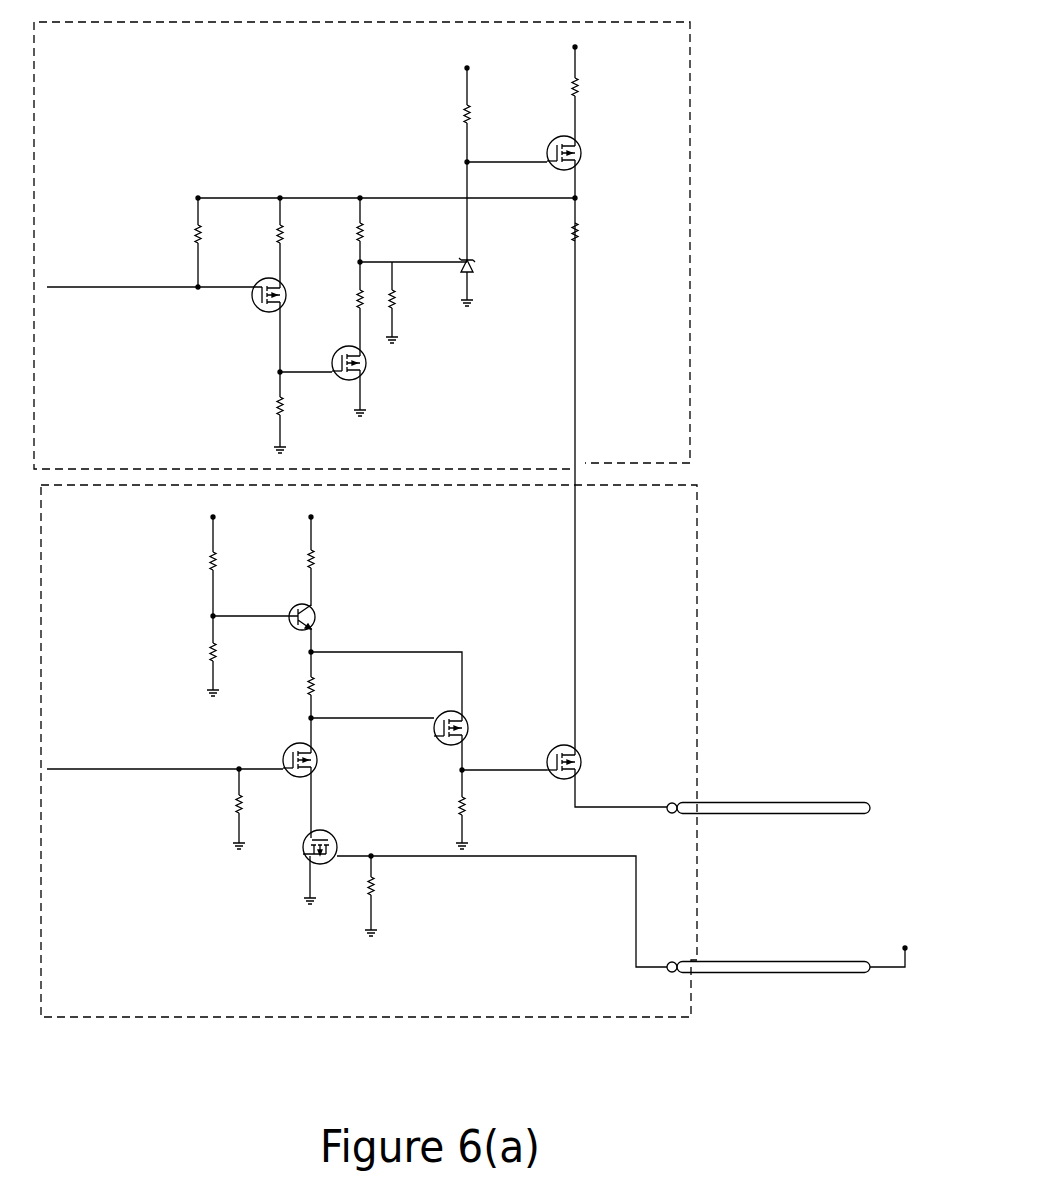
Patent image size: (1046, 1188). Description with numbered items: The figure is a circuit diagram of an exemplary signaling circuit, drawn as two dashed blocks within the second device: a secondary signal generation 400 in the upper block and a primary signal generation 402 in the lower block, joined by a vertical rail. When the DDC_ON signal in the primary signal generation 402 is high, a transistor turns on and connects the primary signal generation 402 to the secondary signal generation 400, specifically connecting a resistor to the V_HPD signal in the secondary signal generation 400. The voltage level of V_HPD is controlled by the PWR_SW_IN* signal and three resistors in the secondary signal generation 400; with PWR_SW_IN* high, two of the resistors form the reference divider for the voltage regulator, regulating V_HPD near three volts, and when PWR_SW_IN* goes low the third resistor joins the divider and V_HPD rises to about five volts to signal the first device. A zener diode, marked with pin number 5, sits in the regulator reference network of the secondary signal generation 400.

The secondary signal generation 400 is at (418, 414).
The primary signal generation 402 is at (712, 642).
The zener diode 5 is at (471, 282).